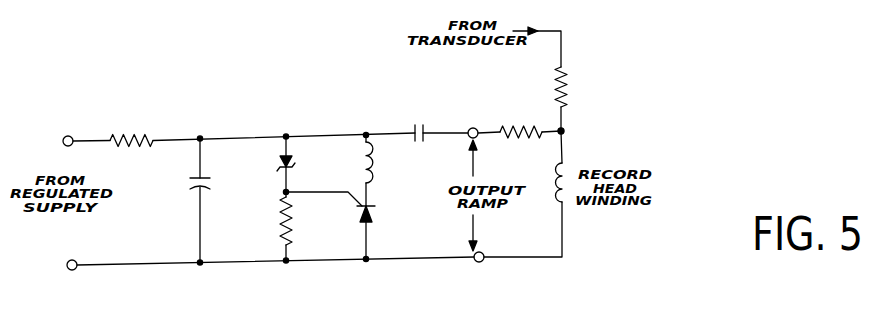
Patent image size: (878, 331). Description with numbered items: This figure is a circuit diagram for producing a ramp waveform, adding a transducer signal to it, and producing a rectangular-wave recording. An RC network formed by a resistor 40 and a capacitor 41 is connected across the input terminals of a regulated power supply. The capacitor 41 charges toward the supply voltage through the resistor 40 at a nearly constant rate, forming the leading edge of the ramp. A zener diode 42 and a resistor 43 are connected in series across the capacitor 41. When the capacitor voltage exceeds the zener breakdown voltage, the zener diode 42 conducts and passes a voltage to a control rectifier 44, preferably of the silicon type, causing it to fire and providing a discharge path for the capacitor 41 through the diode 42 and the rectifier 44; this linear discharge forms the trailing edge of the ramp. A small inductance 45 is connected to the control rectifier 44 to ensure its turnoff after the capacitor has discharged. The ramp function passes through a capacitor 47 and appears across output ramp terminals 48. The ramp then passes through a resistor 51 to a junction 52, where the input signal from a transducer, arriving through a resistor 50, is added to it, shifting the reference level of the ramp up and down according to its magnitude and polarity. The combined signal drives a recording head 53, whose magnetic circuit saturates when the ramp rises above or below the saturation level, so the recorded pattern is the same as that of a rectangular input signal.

The resistor 40 is at (137, 134).
The capacitor 41 is at (190, 185).
The zener diode 42 is at (279, 163).
The resistor 43 is at (283, 220).
The control rectifier 44 is at (377, 211).
The inductance 45 is at (374, 166).
The capacitor 47 is at (420, 116).
The output ramp terminals 48 is at (473, 128).
The resistor 50 is at (568, 75).
The resistor 51 is at (516, 124).
The junction 52 is at (567, 131).
The recording head 53 is at (567, 165).